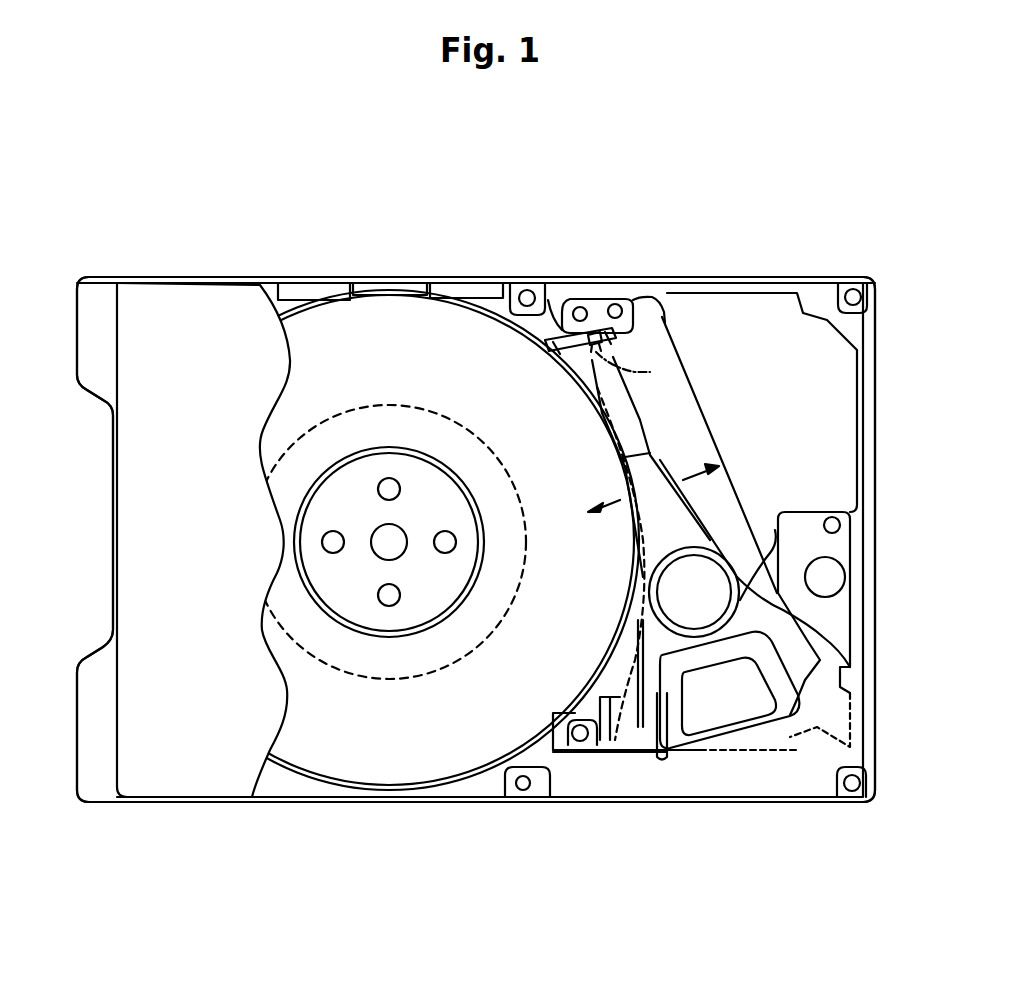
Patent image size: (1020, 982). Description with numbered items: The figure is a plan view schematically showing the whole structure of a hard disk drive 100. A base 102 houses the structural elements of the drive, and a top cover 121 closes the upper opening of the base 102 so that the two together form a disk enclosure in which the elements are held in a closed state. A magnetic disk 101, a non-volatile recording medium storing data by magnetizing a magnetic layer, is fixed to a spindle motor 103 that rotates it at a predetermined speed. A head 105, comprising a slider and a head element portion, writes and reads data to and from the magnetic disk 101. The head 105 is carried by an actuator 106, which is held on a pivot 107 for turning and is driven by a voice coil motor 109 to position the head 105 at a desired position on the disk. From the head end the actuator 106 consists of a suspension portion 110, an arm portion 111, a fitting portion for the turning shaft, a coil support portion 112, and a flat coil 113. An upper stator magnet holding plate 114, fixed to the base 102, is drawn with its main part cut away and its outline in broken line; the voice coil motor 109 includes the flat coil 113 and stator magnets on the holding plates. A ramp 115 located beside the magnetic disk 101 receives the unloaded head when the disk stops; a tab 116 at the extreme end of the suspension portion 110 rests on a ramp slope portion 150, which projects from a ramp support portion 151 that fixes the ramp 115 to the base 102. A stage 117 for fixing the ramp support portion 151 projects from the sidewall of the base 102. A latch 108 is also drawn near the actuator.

The hard disk drive 100 is at (858, 227).
The magnetic disk 101 is at (355, 765).
The base 102 is at (102, 780).
The spindle motor 103 is at (420, 643).
The head 105 is at (652, 372).
The actuator 106 is at (758, 567).
The pivot 107 is at (678, 594).
The latch 108 is at (768, 550).
The voice coil motor 109 is at (705, 760).
The suspension portion 110 is at (620, 397).
The arm portion 111 is at (680, 506).
The coil support portion 112 is at (608, 632).
The flat coil 113 is at (758, 722).
The upper stator magnet holding plate 114 is at (833, 633).
The ramp 115 is at (604, 292).
The tab 116 is at (590, 356).
The stage 117 is at (643, 298).
The top cover 121 is at (172, 298).
The ramp slope portion 150 is at (556, 354).
The ramp support portion 151 is at (556, 318).